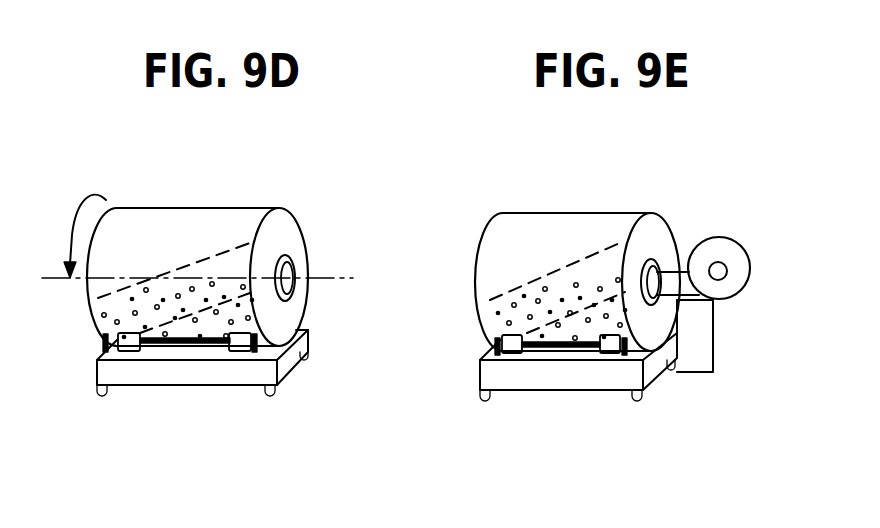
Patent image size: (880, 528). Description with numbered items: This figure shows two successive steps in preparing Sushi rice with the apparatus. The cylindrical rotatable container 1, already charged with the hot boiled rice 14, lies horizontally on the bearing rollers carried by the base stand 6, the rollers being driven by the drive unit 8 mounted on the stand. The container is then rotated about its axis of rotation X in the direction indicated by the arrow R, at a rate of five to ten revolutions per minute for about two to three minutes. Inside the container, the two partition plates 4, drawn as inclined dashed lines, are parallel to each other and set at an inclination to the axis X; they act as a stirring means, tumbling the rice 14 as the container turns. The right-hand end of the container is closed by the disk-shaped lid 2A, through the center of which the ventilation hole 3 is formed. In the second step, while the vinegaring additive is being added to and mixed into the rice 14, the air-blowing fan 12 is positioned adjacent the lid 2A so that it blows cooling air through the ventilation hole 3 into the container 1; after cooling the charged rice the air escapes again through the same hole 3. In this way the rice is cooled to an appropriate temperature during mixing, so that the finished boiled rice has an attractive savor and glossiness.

In FIG. 9D, the rotatable container 1 is at (200, 208).
In FIG. 9E, the rotatable container 1 is at (608, 213).
In FIG. 9D, the lid 2A is at (288, 235).
In FIG. 9E, the lid 2A is at (666, 248).
In FIG. 9D, the ventilation hole 3 is at (291, 291).
In FIG. 9E, the ventilation hole 3 is at (660, 300).
In FIG. 9D, the partition plate 4 is at (146, 280).
In FIG. 9E, the partition plate 4 is at (551, 278).
In FIG. 9D, the base stand 6 is at (188, 385).
In FIG. 9E, the base stand 6 is at (600, 388).
In FIG. 9D, the drive unit 8 is at (118, 350).
In FIG. 9E, the drive unit 8 is at (510, 354).
In FIG. 9E, the air-blowing fan 12 is at (733, 247).
In FIG. 9D, the boiled rice 14 is at (100, 312).
In FIG. 9E, the boiled rice 14 is at (500, 312).
In FIG. 9D, the direction of rotation R is at (77, 236).
In FIG. 9D, the axis of rotation X is at (329, 278).